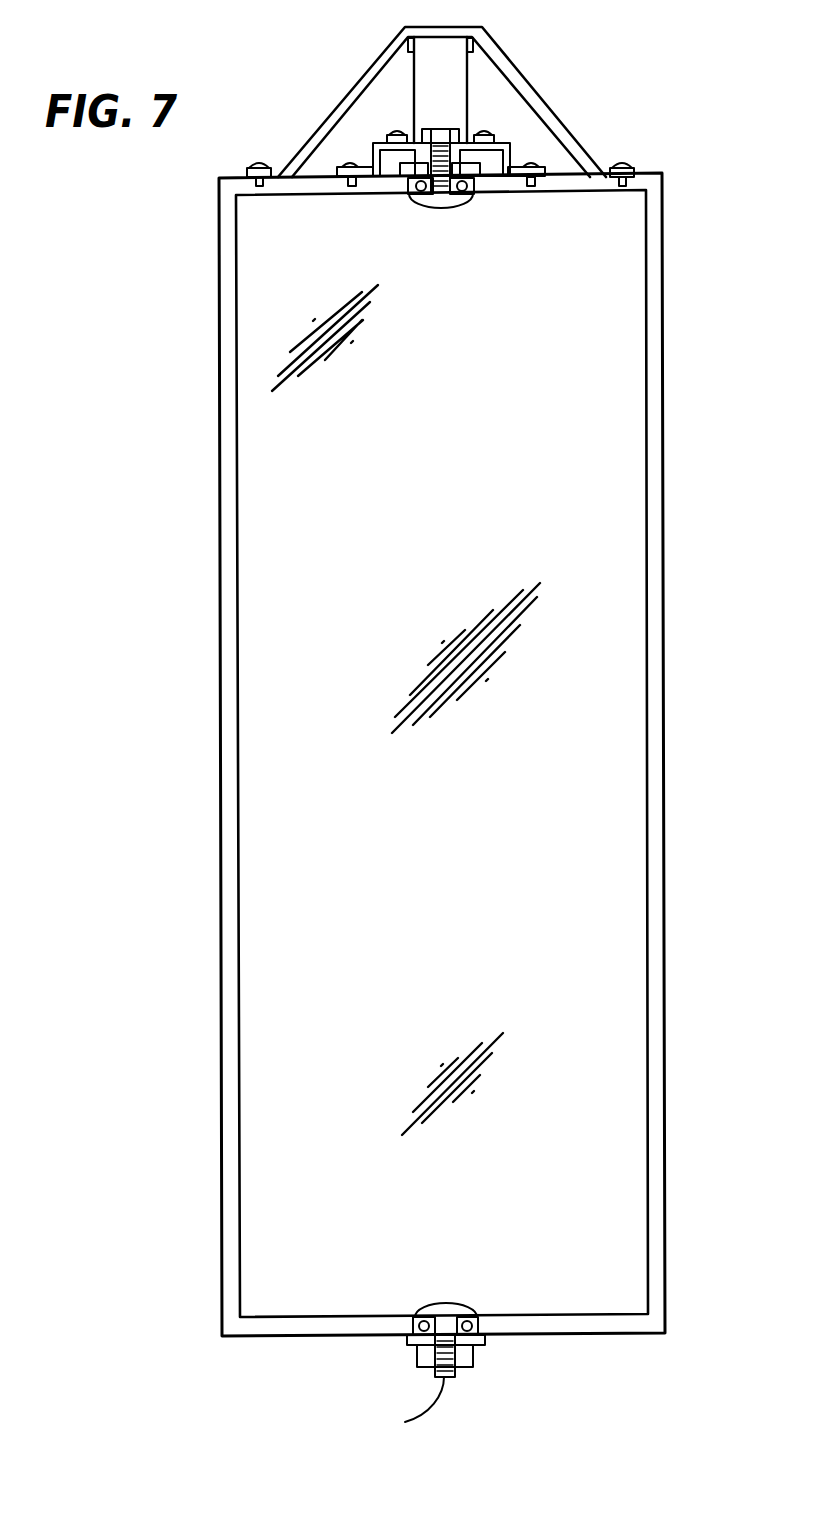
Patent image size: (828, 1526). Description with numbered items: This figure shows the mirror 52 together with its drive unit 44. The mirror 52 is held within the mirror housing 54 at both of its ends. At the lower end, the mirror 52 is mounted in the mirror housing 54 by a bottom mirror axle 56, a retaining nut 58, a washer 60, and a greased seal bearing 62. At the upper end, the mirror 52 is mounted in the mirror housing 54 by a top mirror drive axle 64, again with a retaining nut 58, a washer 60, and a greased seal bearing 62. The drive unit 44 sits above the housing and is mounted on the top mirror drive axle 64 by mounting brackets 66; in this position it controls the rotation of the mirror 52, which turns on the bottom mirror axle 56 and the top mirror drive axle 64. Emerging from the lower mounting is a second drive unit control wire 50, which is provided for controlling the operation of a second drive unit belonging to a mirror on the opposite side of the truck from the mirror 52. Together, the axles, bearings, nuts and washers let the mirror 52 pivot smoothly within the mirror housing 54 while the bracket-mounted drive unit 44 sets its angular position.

The drive unit 44 is at (423, 72).
The second drive unit control wire 50 is at (445, 1403).
The mirror 52 is at (640, 755).
The mirror housing 54 is at (658, 892).
The bottom mirror axle 56 is at (452, 1308).
The retaining nut 58 is at (415, 157).
The washer 60 is at (403, 178).
The greased seal bearing 62 is at (411, 195).
The top mirror drive axle 64 is at (452, 204).
The mounting brackets 66 is at (538, 90).